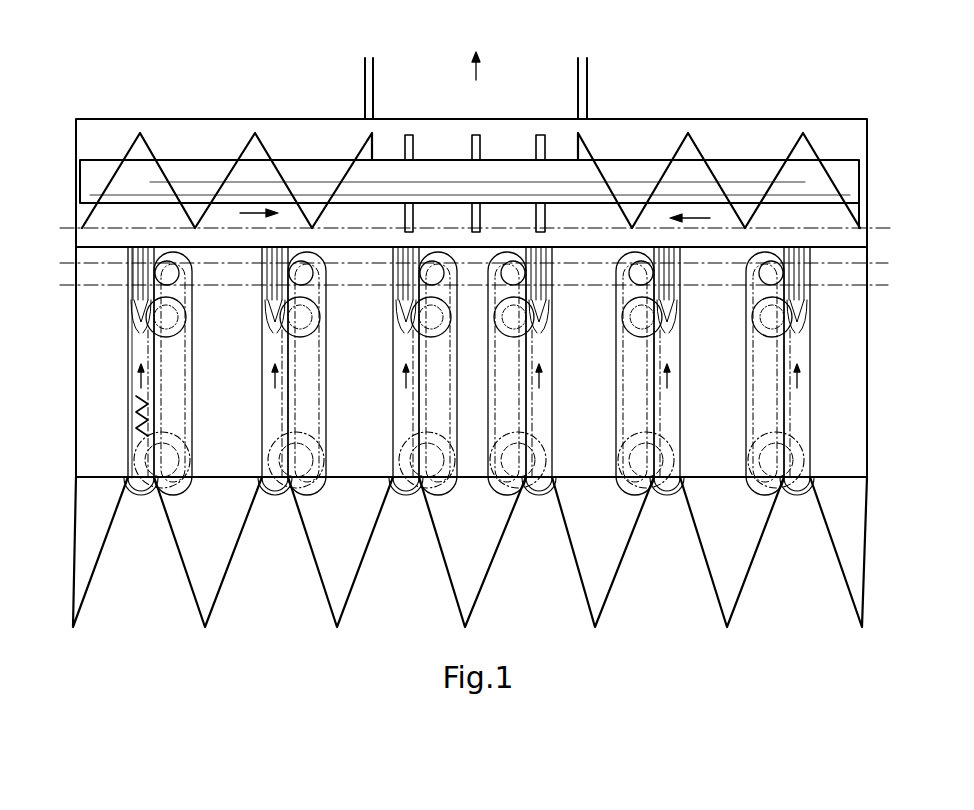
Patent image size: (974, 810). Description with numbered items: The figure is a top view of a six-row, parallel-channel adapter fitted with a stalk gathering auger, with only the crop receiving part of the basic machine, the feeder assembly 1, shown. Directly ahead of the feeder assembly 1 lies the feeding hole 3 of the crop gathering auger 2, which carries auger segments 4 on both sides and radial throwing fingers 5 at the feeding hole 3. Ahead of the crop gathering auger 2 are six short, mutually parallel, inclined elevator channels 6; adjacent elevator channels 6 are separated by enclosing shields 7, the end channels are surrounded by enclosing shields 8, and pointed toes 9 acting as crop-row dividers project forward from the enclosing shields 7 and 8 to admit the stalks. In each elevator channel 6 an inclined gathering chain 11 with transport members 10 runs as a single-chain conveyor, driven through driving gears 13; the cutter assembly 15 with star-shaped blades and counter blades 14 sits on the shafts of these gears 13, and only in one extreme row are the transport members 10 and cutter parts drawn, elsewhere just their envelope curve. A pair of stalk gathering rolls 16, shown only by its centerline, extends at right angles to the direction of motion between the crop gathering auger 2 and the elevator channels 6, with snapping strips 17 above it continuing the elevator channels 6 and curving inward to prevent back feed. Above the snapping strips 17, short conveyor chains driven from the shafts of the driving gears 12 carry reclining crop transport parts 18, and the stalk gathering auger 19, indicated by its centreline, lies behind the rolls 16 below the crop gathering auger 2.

The feeder assembly 1 is at (577, 110).
The crop gathering auger 2 is at (858, 171).
The feeding hole 3 is at (504, 137).
The auger segments 4 is at (150, 140).
The radial throwing fingers 5 is at (414, 136).
The elevator channels 6 is at (128, 378).
The enclosing shields 7 is at (222, 396).
The enclosing shields 8 is at (76, 414).
The pointed toes 9 is at (190, 578).
The transport members 10 is at (672, 395).
The gathering chains 11 is at (662, 416).
The driving gears 12 is at (176, 312).
The driving gears 13 is at (310, 455).
The counter blades 14 is at (541, 462).
The cutter assembly 15 is at (138, 493).
The pair of stalk gathering rolls 16 is at (888, 263).
The snapping strips 17 is at (808, 296).
The crop transport parts 18 is at (808, 342).
The stalk gathering auger 19 is at (883, 228).